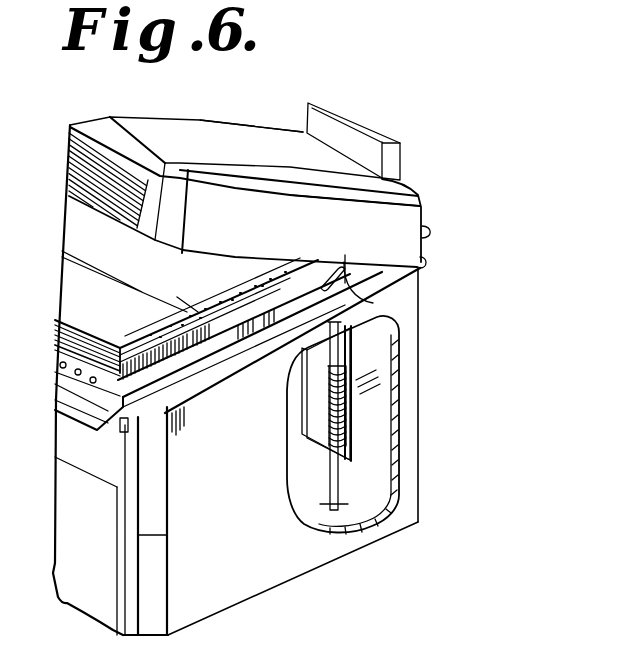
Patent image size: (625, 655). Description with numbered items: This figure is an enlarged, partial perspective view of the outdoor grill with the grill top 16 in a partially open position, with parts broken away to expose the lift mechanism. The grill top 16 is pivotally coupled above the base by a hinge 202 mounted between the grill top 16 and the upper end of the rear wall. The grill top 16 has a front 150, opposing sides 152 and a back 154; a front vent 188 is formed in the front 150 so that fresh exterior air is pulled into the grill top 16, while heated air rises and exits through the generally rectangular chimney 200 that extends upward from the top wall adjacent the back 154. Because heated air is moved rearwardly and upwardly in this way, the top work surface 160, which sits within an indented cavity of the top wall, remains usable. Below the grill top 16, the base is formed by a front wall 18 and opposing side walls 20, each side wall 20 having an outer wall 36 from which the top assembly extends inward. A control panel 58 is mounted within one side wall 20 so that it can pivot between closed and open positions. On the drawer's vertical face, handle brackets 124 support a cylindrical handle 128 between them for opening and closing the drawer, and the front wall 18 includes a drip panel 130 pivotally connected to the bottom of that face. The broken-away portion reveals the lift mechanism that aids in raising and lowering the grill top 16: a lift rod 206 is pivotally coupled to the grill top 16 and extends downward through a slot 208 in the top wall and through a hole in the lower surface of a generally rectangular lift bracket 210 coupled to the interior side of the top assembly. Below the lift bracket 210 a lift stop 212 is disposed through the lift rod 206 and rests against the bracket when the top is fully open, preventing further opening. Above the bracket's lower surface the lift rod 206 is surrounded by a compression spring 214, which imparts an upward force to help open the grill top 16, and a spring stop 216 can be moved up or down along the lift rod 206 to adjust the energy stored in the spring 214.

The grill top 16 is at (70, 124).
The front wall 18 is at (100, 618).
The side wall 20 is at (403, 512).
The outer wall 36 is at (212, 606).
The control panel 58 is at (160, 507).
The handle brackets 124 is at (122, 440).
The cylindrical handle 128 is at (60, 412).
The drip panel 130 is at (60, 538).
The front 150 is at (78, 200).
The sides 152 is at (304, 236).
The back 154 is at (423, 231).
The top work surface 160 is at (241, 126).
The front vent 188 is at (78, 158).
The chimney 200 is at (374, 126).
The hinge 202 is at (420, 261).
The lift rod 206 is at (373, 303).
The slot 208 is at (352, 268).
The lift bracket 210 is at (373, 443).
The lift stop 212 is at (323, 503).
The compression spring 214 is at (307, 417).
The spring stop 216 is at (329, 371).